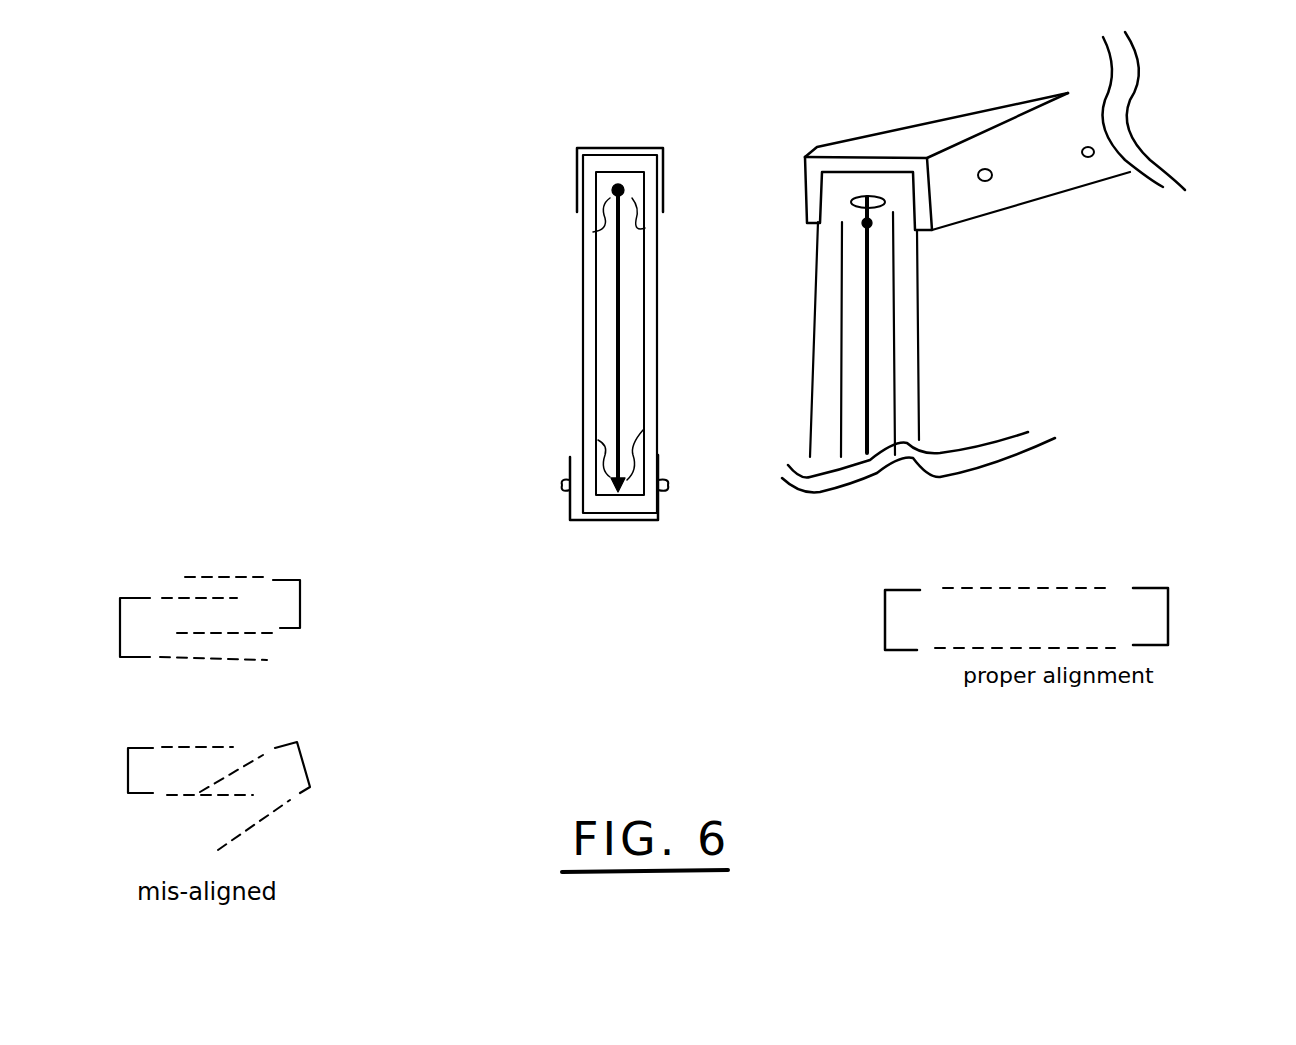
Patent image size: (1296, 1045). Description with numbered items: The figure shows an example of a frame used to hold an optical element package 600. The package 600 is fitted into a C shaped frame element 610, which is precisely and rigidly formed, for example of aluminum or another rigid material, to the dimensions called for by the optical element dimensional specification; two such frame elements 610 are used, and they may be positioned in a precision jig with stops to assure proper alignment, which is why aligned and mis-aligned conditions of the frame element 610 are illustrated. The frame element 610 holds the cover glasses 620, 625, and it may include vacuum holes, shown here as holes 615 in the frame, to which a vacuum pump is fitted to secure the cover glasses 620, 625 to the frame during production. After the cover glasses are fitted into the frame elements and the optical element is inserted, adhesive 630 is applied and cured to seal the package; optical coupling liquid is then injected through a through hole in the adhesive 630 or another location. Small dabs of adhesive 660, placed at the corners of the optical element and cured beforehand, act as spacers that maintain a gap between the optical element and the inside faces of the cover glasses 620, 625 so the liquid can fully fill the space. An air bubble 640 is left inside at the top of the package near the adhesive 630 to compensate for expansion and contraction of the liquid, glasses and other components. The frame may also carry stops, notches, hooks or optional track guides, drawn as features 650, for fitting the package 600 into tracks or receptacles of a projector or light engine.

The optical element package 600 is at (470, 275).
The C shaped frame element 610 is at (588, 148).
The mounting holes 615 is at (1093, 162).
The cover glass 620 is at (665, 302).
The cover glass 625 is at (577, 332).
The adhesive 630 is at (627, 162).
The air bubble 640 is at (627, 185).
The tabs 650 is at (555, 488).
The adhesive dabs 660 is at (605, 205).